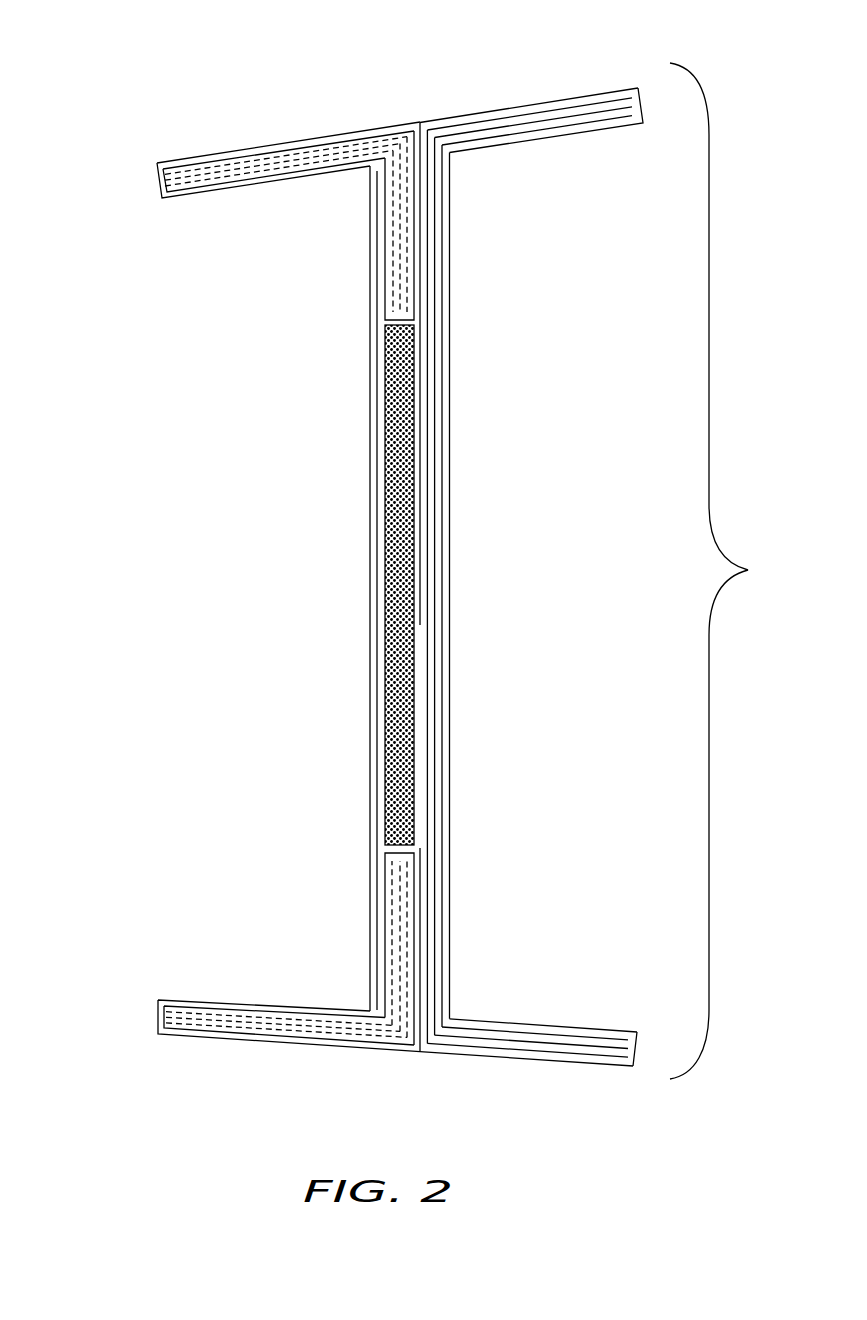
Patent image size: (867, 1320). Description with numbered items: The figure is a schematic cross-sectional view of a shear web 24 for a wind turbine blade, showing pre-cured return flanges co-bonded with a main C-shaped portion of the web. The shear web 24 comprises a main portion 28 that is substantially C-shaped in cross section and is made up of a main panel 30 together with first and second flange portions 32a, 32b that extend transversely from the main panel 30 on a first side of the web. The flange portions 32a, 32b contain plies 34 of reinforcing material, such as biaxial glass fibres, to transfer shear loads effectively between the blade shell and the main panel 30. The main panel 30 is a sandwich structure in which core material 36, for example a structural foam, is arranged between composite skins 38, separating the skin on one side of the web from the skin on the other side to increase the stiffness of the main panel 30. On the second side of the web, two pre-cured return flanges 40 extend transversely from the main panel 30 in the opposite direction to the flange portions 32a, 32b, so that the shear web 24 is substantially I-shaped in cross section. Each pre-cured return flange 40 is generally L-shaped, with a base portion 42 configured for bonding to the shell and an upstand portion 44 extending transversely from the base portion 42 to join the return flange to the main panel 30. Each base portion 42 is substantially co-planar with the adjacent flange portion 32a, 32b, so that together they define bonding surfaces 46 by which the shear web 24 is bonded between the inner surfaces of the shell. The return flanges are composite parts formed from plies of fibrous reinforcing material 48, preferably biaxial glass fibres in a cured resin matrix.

The shear web 24 is at (128, 66).
The main portion 28 is at (736, 571).
The main panel 30 is at (480, 603).
The first flange portion 32a is at (584, 161).
The second flange portion 32b is at (589, 1001).
The plies 34 is at (495, 130).
The core material 36 is at (405, 618).
The composite skins 38 is at (378, 690).
The pre-cured return flange 40 is at (262, 199).
The base portion 42 is at (307, 136).
The upstand portion 44 is at (380, 268).
The bonding surfaces 46 is at (441, 109).
The plies of fibrous reinforcing material 48 is at (218, 168).